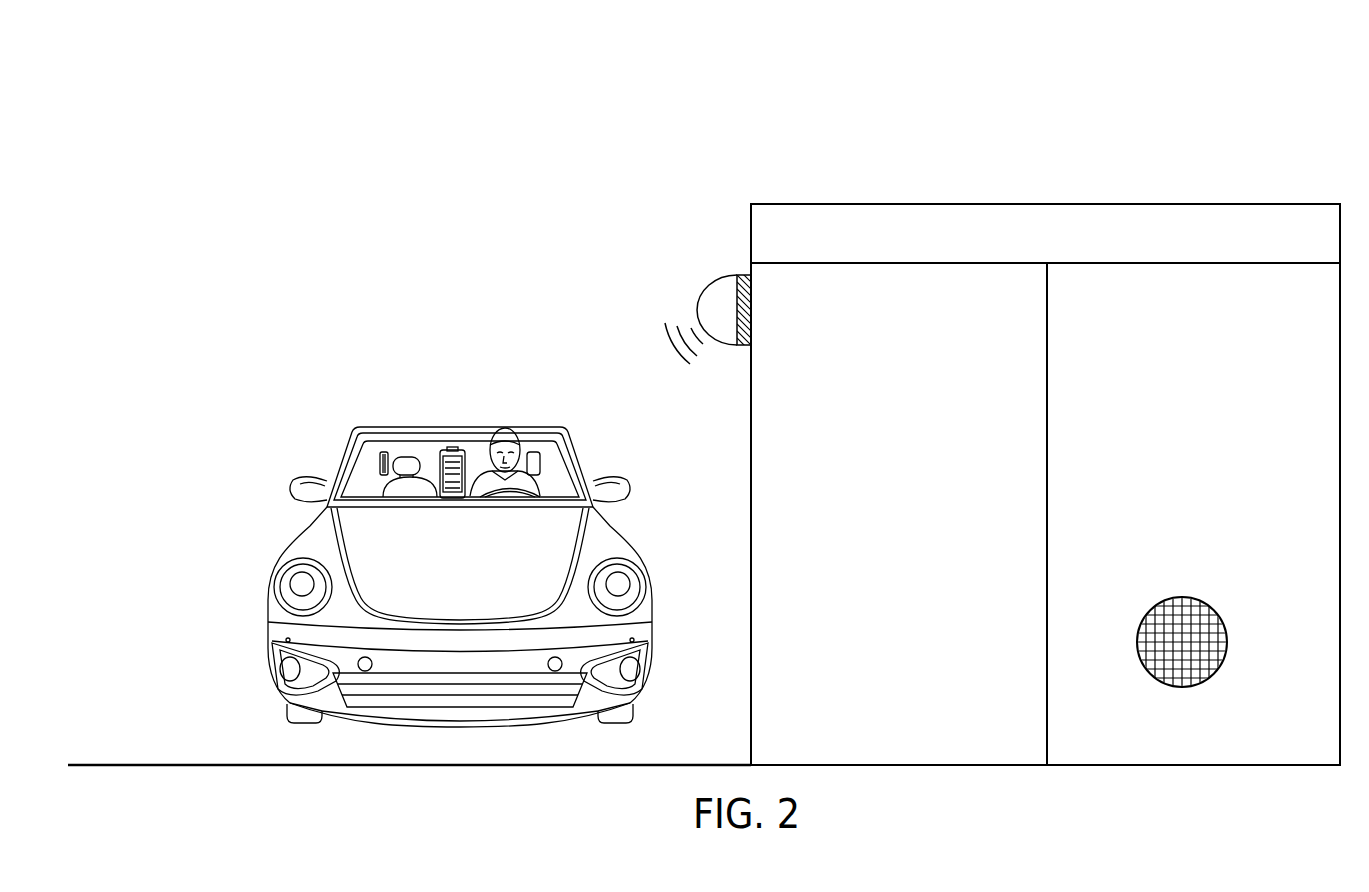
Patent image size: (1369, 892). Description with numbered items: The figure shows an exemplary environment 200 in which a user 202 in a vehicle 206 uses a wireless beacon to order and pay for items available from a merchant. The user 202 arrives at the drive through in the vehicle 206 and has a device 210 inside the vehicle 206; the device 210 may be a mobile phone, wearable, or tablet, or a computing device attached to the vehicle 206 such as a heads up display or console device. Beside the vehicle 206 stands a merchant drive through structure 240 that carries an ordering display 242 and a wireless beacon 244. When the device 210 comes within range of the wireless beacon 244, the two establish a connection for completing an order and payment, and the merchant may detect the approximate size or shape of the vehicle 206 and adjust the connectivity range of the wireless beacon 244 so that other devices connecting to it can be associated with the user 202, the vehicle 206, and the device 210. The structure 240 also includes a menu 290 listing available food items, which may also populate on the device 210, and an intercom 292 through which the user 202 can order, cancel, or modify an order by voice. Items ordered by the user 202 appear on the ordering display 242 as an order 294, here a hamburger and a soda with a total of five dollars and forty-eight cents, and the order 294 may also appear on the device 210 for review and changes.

The environment 200 is at (1118, 111).
The user 202 is at (527, 461).
The vehicle 206 is at (530, 405).
The device 210 is at (440, 466).
The merchant drive through structure 240 is at (1055, 255).
The ordering display 242 is at (837, 342).
The wireless beacon 244 is at (718, 272).
The menu 290 is at (1262, 312).
The intercom 292 is at (1273, 585).
The order 294 is at (948, 492).